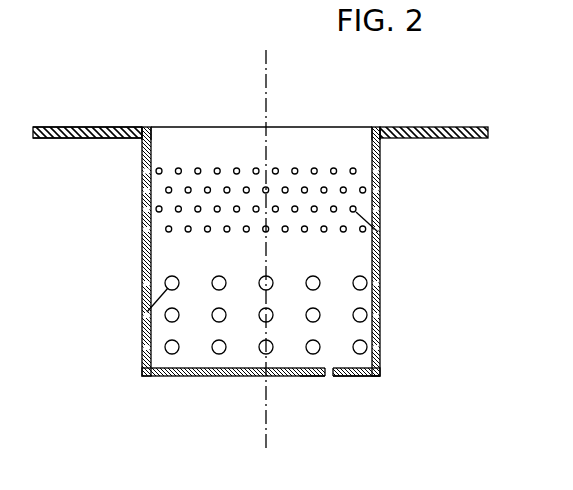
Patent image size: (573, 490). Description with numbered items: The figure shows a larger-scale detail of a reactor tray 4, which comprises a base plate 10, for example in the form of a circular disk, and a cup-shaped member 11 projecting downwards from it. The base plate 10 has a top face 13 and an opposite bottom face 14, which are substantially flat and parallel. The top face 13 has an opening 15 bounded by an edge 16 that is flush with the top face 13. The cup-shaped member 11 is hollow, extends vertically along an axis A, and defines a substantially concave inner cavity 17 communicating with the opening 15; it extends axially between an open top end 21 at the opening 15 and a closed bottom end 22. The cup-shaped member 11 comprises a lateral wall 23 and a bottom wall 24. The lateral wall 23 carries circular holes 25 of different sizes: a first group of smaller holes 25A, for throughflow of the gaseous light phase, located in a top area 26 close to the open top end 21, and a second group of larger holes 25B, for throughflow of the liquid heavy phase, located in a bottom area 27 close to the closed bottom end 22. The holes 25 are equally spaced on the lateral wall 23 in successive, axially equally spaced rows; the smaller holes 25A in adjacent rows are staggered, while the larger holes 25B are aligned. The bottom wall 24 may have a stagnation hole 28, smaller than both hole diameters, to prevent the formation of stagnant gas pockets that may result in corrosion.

The axis A is at (266, 65).
The tray 4 is at (37, 127).
The base plate 10 is at (430, 139).
The cup-shaped member 11 is at (380, 262).
The top face 13 is at (74, 127).
The bottom face 14 is at (74, 138).
The opening 15 is at (155, 127).
The edge 16 is at (376, 127).
The inner cavity 17 is at (342, 148).
The open top end 21 is at (194, 127).
The closed bottom end 22 is at (160, 377).
The lateral wall 23 is at (141, 265).
The bottom wall 24 is at (354, 378).
The holes 25 is at (144, 210).
The smaller holes 25A is at (380, 232).
The larger holes 25B is at (142, 315).
The top area 26 is at (395, 188).
The bottom area 27 is at (126, 356).
The stagnation holes 28 is at (328, 378).